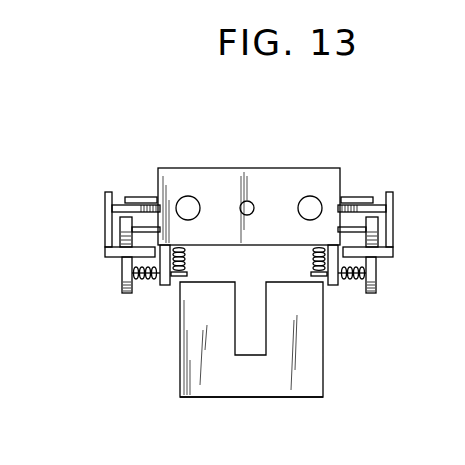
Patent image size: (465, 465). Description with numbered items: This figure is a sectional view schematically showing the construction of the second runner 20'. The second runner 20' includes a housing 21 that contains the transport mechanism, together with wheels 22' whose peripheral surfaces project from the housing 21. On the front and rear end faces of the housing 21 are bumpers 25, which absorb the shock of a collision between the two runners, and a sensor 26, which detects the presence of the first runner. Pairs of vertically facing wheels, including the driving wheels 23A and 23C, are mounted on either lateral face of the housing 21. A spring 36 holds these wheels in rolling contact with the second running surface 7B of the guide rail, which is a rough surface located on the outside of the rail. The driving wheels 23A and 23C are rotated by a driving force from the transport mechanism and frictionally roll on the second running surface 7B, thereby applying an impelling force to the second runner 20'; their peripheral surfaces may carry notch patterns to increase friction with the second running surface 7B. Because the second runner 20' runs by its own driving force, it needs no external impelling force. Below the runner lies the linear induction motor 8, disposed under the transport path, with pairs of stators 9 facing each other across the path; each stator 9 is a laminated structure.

The second runner 20' is at (249, 183).
The housing 21 is at (285, 185).
The bumpers 25 is at (188, 196).
The sensor 26 is at (249, 201).
The wheels 22' is at (254, 189).
The driving wheel 23A is at (120, 226).
The second running surface 7B is at (117, 258).
The driving wheel 23C is at (127, 294).
The spring 36 is at (187, 261).
The stator 9 is at (316, 366).
The linear induction motor 8 is at (286, 404).